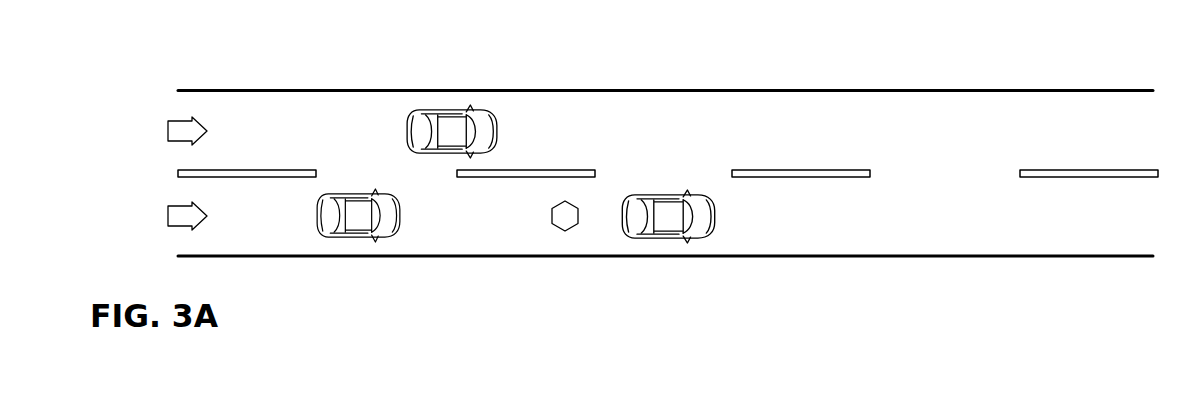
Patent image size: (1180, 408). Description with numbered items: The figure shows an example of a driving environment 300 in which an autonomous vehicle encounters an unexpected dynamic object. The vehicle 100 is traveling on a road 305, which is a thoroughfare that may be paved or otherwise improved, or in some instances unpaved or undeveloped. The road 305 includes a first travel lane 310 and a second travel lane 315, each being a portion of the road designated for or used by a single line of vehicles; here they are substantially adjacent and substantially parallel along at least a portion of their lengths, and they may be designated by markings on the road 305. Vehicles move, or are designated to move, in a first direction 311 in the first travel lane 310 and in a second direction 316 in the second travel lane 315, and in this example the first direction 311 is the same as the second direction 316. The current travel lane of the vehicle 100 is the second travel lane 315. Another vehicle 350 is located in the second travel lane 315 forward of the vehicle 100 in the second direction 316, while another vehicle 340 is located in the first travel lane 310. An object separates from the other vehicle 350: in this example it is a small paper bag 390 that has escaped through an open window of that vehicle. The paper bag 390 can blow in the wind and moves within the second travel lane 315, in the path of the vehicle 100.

The driving environment 300 is at (1142, 78).
The road 305 is at (189, 69).
The first travel lane 310 is at (294, 143).
The second travel lane 315 is at (294, 224).
The first direction 311 is at (168, 131).
The second direction 316 is at (168, 216).
The other vehicle 340 is at (445, 111).
The vehicle 100 is at (329, 238).
The other vehicle 350 is at (654, 239).
The paper bag 390 is at (569, 230).